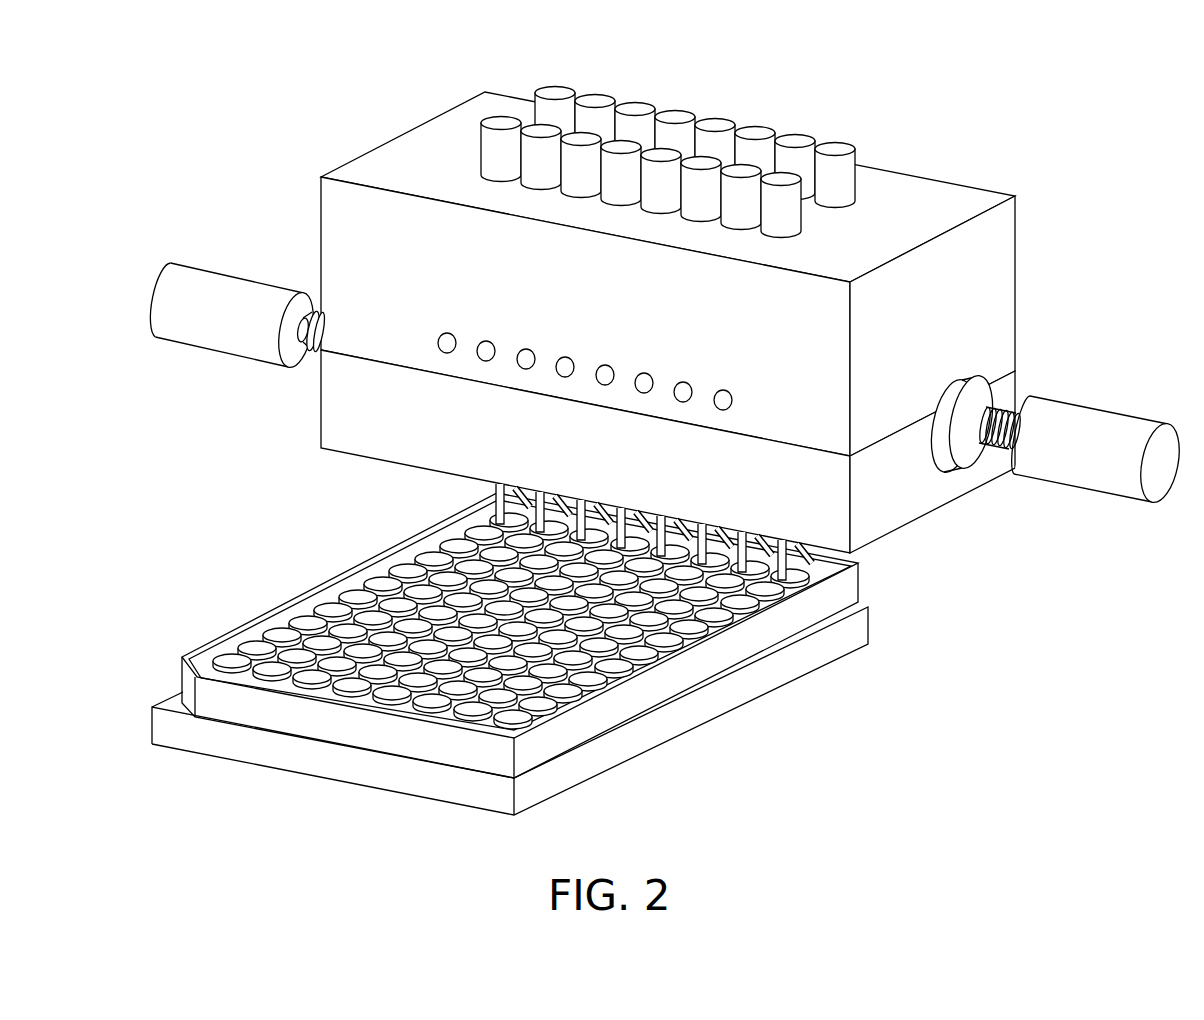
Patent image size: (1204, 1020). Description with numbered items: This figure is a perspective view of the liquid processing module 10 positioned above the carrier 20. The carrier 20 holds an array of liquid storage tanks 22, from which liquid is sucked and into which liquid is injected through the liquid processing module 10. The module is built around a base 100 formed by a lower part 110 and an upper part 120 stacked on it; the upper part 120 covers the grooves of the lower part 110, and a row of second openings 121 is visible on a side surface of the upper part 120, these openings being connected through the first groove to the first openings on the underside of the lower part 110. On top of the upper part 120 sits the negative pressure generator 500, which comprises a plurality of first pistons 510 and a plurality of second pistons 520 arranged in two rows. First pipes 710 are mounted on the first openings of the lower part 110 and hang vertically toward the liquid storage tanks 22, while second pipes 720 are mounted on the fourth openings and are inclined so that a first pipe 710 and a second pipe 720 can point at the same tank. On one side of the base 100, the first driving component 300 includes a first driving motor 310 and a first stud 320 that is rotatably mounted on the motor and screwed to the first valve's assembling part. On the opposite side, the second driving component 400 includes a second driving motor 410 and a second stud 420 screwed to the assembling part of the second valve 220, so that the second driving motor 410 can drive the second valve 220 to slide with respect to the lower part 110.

The liquid processing module 10 is at (348, 136).
The carrier 20 is at (621, 748).
The liquid storage tank 22 is at (720, 620).
The base 100 is at (1112, 255).
The lower part 110 is at (1007, 390).
The upper part 120 is at (983, 273).
The second openings 121 is at (676, 396).
The second valve 220 is at (945, 458).
The first driving component 300 is at (310, 443).
The first driving motor 310 is at (222, 332).
The first stud 320 is at (316, 350).
The second driving component 400 is at (1113, 548).
The second driving motor 410 is at (1092, 468).
The second stud 420 is at (997, 452).
The negative pressure generator 500 is at (713, 108).
The first pistons 510 is at (537, 131).
The second pistons 520 is at (797, 142).
The first pipes 710 is at (796, 562).
The second pipes 720 is at (860, 572).